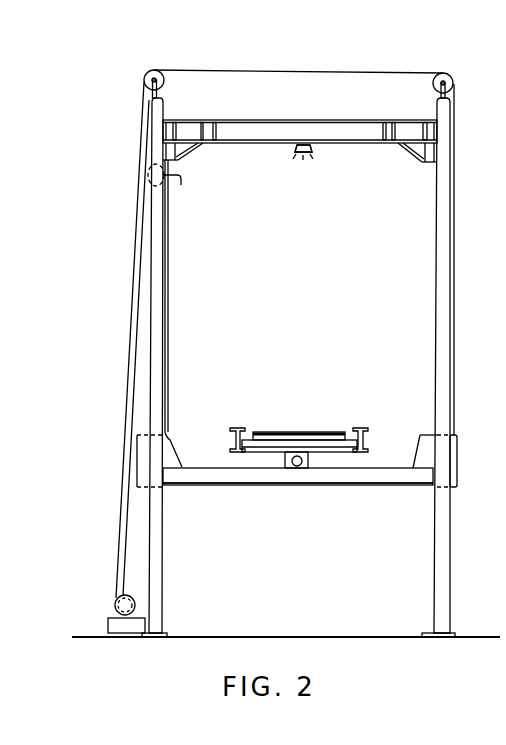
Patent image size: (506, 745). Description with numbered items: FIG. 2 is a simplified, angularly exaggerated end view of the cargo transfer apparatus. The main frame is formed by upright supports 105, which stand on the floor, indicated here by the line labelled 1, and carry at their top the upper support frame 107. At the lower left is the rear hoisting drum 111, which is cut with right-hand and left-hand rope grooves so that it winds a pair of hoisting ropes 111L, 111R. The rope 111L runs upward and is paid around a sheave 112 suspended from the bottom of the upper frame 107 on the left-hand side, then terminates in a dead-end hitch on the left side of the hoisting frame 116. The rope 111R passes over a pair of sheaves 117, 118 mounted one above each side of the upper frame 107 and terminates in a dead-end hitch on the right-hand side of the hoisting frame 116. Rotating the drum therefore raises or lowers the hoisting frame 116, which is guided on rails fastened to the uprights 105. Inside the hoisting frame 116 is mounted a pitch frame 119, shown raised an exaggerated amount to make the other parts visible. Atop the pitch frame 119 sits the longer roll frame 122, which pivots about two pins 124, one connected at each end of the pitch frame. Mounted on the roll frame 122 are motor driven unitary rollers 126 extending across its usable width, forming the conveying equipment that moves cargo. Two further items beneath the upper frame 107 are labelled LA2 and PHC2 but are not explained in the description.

The floor / base surface 1 is at (472, 637).
The upright supports 105 is at (163, 570).
The upper support frame 107 is at (358, 127).
The rear hoisting drum 111 is at (115, 603).
The hoisting rope 111L is at (170, 305).
The hoisting rope 111R is at (277, 62).
The sheave 112 is at (177, 187).
The hoisting frame 116 is at (197, 487).
The sheave 117 is at (157, 76).
The sheave 118 is at (447, 80).
The pitch frame 119 is at (257, 478).
The roll frame 122 is at (343, 455).
The pins 124 is at (297, 467).
The motor driven unitary rollers 126 is at (307, 430).
The lamp LA2 is at (297, 148).
The photocell PHC2 is at (276, 178).